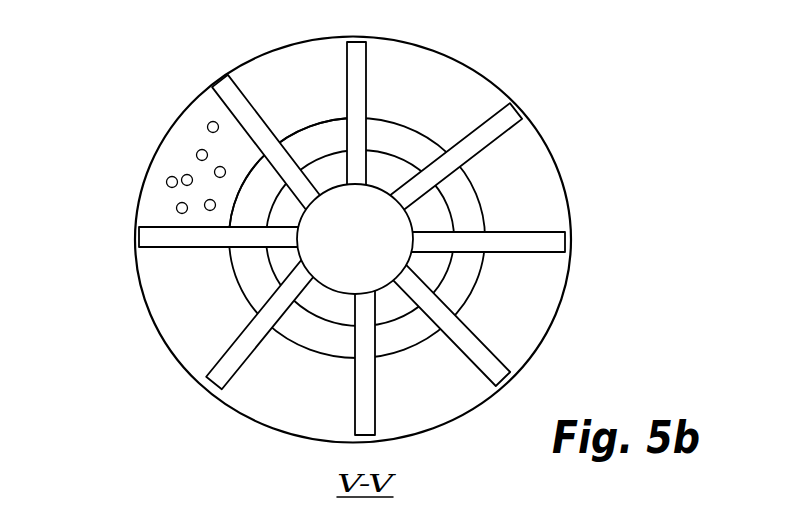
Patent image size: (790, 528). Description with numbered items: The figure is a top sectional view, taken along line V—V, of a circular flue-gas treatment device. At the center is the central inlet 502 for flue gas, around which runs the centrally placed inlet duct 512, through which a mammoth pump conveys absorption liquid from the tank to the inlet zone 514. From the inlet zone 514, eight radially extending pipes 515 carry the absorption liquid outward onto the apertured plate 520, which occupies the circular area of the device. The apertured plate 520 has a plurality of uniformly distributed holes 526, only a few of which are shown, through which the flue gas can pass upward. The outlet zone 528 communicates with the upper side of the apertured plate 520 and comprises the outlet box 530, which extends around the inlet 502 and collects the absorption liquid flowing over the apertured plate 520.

The central inlet 502 is at (313, 318).
The inlet duct 512 is at (300, 253).
The inlet zone 514 is at (517, 226).
The pipes 515 is at (470, 145).
The apertured plate 520 is at (146, 216).
The holes 526 is at (198, 151).
The outlet zone 528 is at (313, 138).
The outlet box 530 is at (462, 287).